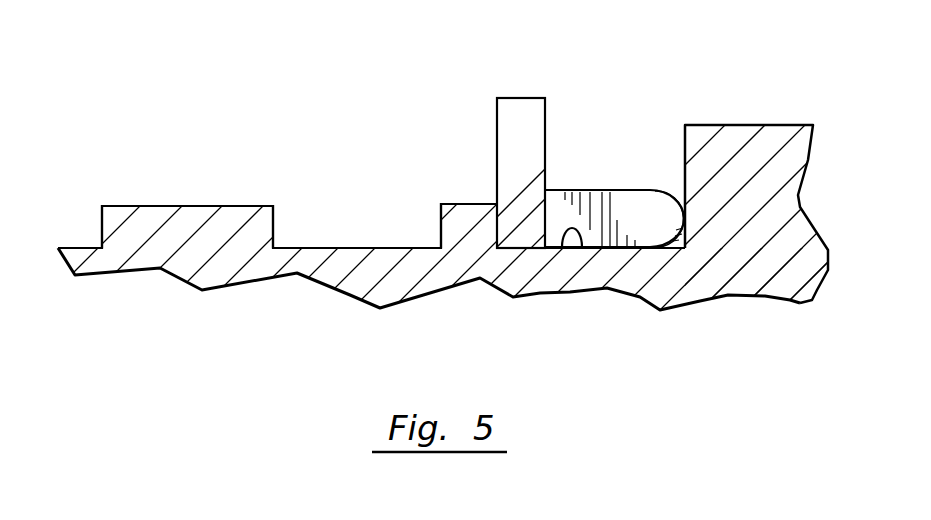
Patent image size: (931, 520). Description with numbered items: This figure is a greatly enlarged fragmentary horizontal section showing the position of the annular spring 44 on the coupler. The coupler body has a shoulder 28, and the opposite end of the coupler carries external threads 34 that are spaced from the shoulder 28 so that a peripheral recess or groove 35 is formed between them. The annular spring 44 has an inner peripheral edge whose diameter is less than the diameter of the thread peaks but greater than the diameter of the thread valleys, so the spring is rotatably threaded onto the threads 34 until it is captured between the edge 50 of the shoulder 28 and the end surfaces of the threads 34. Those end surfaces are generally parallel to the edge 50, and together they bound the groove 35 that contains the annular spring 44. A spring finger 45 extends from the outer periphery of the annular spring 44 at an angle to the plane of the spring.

The shoulder 28 is at (733, 270).
The external threads 34 is at (180, 206).
The peripheral recess or groove 35 is at (566, 236).
The annular spring 44 is at (513, 110).
The spring fingers 45 is at (608, 200).
The edge 50 is at (683, 142).